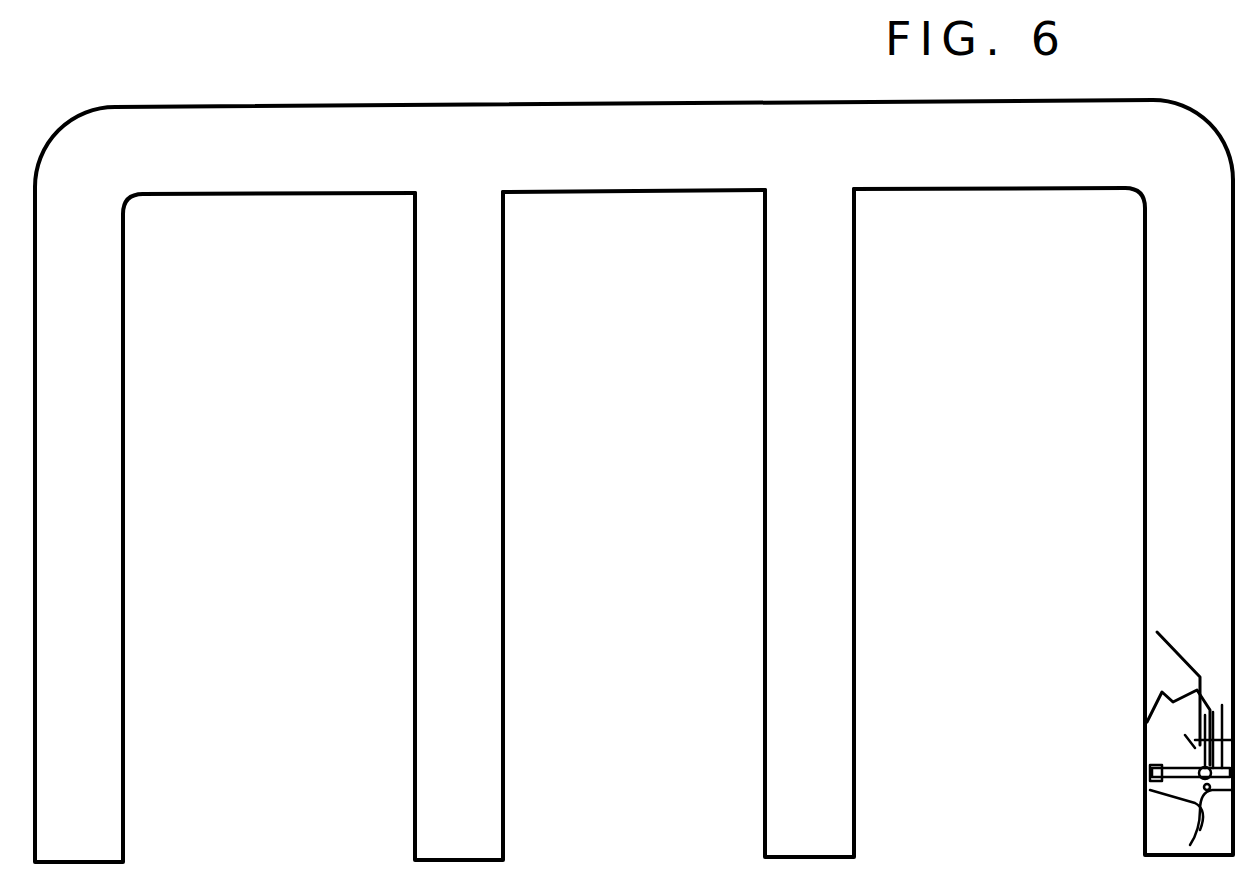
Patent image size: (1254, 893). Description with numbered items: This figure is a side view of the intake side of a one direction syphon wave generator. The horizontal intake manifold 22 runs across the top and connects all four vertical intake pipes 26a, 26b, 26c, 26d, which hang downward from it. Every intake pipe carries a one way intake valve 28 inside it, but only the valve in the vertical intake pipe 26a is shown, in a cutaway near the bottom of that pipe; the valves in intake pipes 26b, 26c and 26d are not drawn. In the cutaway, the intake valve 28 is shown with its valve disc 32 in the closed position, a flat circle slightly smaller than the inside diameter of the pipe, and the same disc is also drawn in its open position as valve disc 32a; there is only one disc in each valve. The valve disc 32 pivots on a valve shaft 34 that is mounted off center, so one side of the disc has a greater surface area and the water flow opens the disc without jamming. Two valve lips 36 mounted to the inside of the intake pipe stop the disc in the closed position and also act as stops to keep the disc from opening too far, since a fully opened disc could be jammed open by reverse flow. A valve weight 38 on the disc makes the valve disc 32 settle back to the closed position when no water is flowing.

The intake manifold 22 is at (705, 193).
The vertical intake pipe 26a is at (1145, 395).
The vertical intake pipe 26b is at (855, 516).
The vertical intake pipe 26c is at (413, 475).
The vertical intake pipe 26d is at (124, 646).
The intake valve 28 is at (1190, 740).
The valve disc 32 is at (1152, 750).
The valve disc in open position 32a is at (1157, 632).
The valve shaft 34 is at (1205, 790).
The valve lips 36 is at (1227, 735).
The valve weight 38 is at (1163, 765).